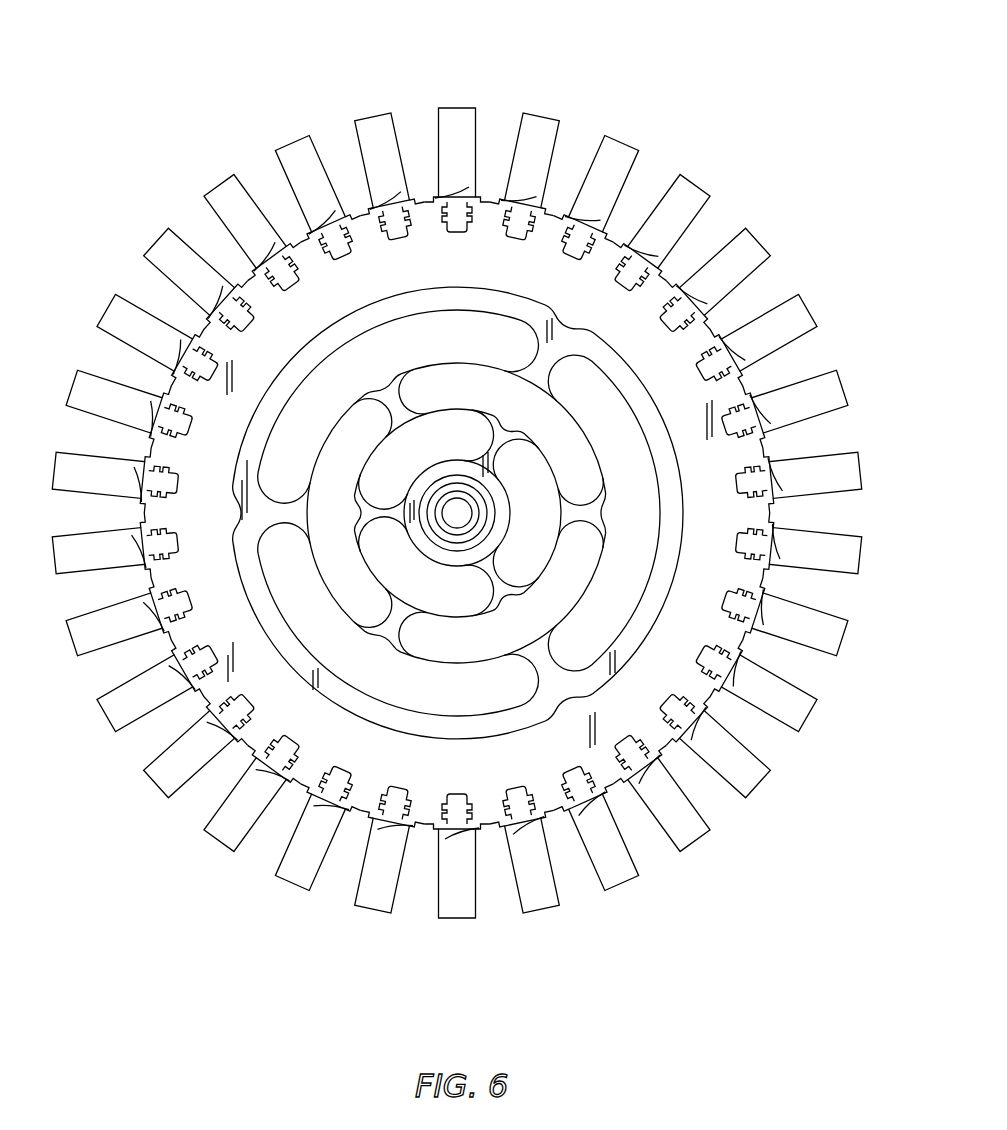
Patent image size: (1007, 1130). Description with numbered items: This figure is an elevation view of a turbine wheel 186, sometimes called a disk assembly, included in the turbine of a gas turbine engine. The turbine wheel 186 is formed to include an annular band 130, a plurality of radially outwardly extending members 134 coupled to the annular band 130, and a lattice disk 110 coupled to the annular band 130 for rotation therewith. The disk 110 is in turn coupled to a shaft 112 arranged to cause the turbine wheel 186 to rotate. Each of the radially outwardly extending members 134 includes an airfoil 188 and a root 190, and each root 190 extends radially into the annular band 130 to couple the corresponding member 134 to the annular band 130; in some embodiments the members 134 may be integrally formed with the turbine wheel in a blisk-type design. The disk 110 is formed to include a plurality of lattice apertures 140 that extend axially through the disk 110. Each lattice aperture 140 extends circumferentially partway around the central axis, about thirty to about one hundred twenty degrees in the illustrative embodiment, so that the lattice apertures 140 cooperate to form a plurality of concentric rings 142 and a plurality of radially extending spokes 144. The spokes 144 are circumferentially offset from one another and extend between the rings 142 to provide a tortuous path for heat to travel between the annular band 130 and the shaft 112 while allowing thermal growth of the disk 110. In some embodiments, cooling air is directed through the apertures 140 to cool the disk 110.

The turbine wheel 186 is at (662, 86).
The annular band 130 is at (488, 240).
The radially outwardly extending members 134 is at (181, 222).
The airfoil 188 is at (377, 157).
The root 190 is at (338, 246).
The disk 110 is at (241, 414).
The shaft 112 is at (418, 530).
The lattice apertures 140 is at (595, 373).
The concentric rings 142 is at (585, 631).
The radially extending spokes 144 is at (532, 677).